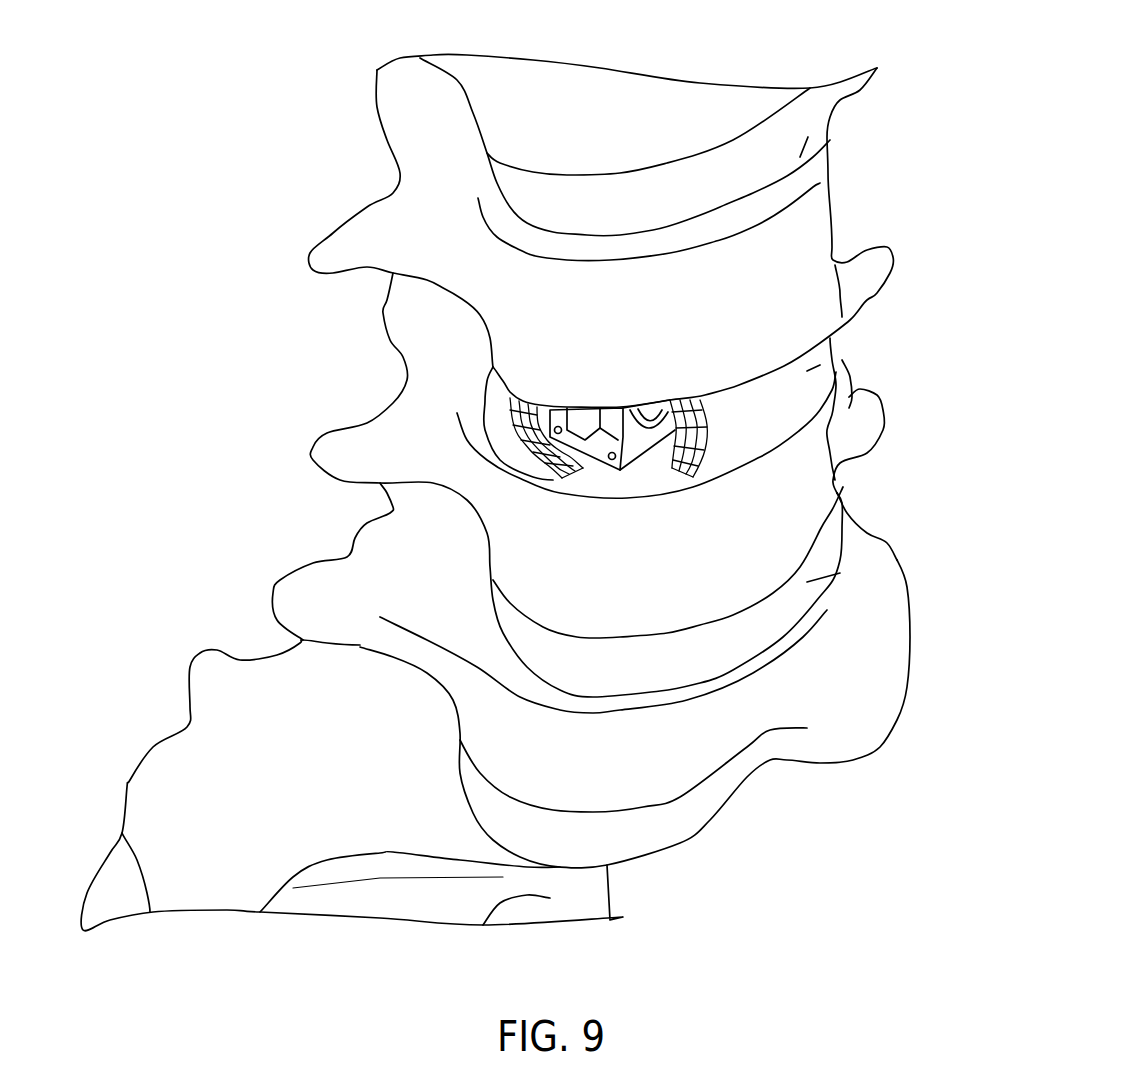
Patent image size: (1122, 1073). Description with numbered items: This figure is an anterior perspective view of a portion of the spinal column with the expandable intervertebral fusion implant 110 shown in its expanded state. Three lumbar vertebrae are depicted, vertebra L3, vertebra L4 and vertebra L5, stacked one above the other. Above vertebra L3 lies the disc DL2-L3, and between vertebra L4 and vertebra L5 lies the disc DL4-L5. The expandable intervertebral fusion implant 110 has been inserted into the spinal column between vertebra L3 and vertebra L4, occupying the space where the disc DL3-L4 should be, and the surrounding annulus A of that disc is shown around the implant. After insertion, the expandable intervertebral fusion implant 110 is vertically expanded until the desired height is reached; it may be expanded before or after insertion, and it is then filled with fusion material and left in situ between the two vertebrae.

The lumbar vertebra L3 is at (813, 230).
The lumbar vertebra L4 is at (823, 483).
The lumbar vertebra L5 is at (750, 720).
The disc DL2-L3 is at (808, 137).
The disc DL3-L4 is at (807, 371).
The disc DL4-L5 is at (807, 582).
The expandable intervertebral fusion implant 110 is at (620, 470).
The annulus A is at (513, 423).